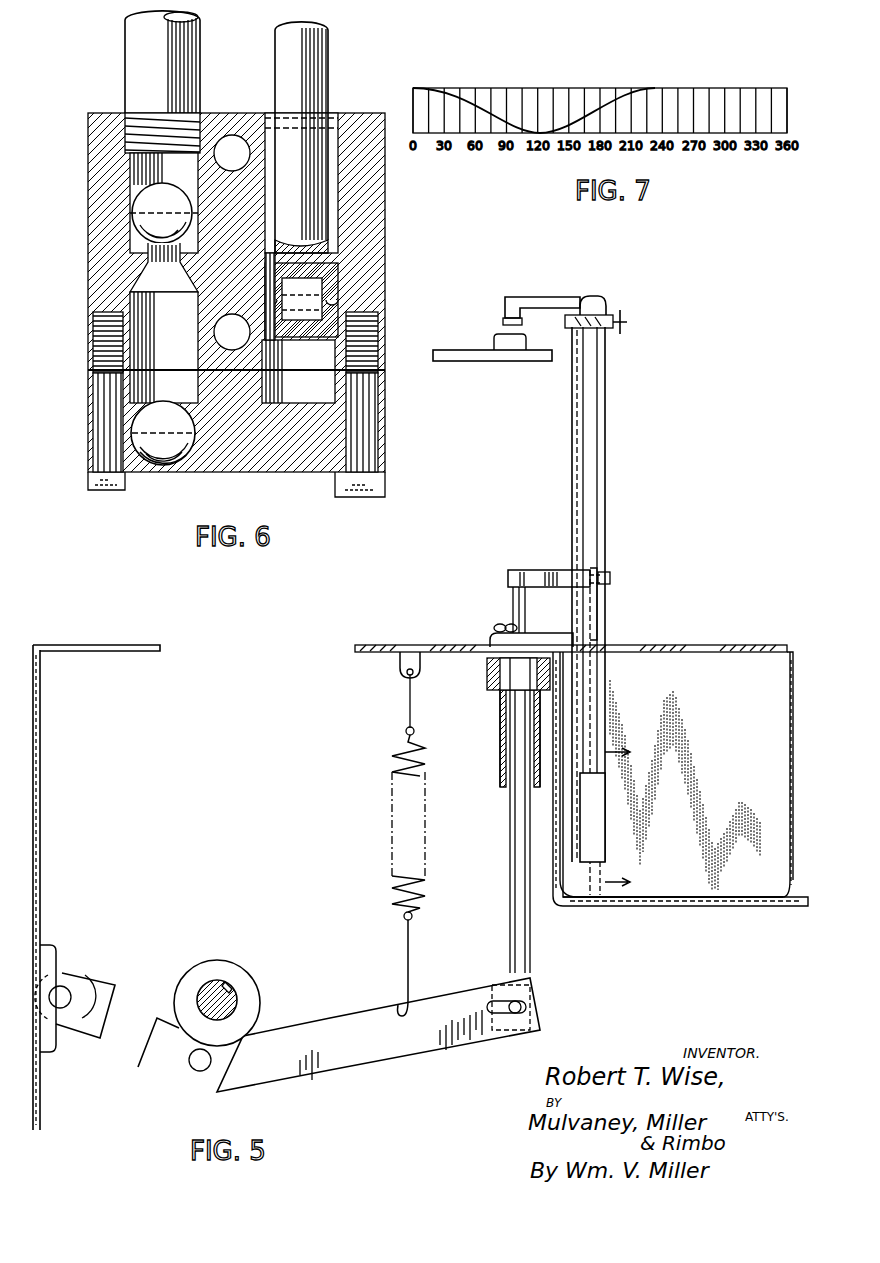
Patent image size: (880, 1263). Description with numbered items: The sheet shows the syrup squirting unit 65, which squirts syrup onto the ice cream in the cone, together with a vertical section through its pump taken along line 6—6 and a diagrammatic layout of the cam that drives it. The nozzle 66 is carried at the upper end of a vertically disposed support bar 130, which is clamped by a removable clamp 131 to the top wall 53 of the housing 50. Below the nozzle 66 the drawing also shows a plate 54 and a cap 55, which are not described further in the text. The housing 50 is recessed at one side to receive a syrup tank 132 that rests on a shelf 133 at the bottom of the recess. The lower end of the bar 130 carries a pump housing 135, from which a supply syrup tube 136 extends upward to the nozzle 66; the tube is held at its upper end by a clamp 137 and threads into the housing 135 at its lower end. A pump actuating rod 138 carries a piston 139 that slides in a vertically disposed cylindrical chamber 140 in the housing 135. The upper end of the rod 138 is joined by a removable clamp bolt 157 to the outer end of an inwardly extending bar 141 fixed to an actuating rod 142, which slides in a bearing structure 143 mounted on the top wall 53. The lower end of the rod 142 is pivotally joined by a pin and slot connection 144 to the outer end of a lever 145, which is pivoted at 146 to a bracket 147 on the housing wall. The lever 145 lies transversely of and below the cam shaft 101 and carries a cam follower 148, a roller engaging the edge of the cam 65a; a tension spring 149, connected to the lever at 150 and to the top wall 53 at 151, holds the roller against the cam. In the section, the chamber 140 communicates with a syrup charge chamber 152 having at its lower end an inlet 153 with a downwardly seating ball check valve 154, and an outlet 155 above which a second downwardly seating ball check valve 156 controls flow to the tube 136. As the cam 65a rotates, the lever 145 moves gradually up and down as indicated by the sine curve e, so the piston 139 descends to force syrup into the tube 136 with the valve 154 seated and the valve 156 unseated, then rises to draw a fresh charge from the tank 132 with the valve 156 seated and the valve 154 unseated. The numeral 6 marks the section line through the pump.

In FIG. 7, the sine curve e is at (478, 122).
In FIG. 5, the housing 50 is at (43, 829).
In FIG. 5, the top wall of the housing 53 is at (378, 644).
In FIG. 5, the dispensing plate 54 is at (470, 355).
In FIG. 5, the cap 55 is at (500, 343).
In FIG. 5, the syrup squirting unit 65 is at (619, 530).
In FIG. 5, the cam 65a is at (237, 967).
In FIG. 5, the nozzle 66 is at (503, 313).
In FIG. 5, the cam shaft 101 is at (210, 988).
In FIG. 5, the support bar 130 is at (572, 470).
In FIG. 5, the removable clamp 131 is at (498, 628).
In FIG. 5, the syrup tank 132 is at (791, 733).
In FIG. 5, the shelf 133 is at (703, 906).
In FIG. 6, the pump housing 135 is at (388, 296).
In FIG. 5, the pump housing 135 is at (597, 840).
In FIG. 6, the supply syrup tube 136 is at (140, 38).
In FIG. 5, the supply syrup tube 136 is at (598, 416).
In FIG. 5, the clamp 137 is at (601, 318).
In FIG. 6, the pump actuating rod 138 is at (283, 60).
In FIG. 6, the piston 139 is at (345, 285).
In FIG. 6, the cylindrical chamber 140 is at (330, 358).
In FIG. 5, the inwardly extending bar 141 is at (540, 571).
In FIG. 5, the actuating rod 142 is at (518, 597).
In FIG. 5, the bearing structure 143 is at (500, 700).
In FIG. 5, the pin and slot connection 144 is at (525, 1006).
In FIG. 5, the lever 145 is at (466, 1000).
In FIG. 5, the pivot 146 is at (68, 993).
In FIG. 5, the bracket 147 is at (48, 955).
In FIG. 5, the cam follower 148 is at (200, 1072).
In FIG. 5, the tension spring 149 is at (400, 872).
In FIG. 5, the spring connection to lever 150 is at (402, 1008).
In FIG. 5, the spring connection to housing top wall 151 is at (401, 695).
In FIG. 6, the syrup charge chamber 152 is at (168, 310).
In FIG. 6, the inlet 153 is at (178, 466).
In FIG. 6, the ball check valve 154 is at (150, 425).
In FIG. 6, the outlet 155 is at (150, 252).
In FIG. 6, the ball check valve 156 is at (150, 205).
In FIG. 5, the removable clamp bolt 157 is at (611, 578).
In FIG. 5, the section line 6— 6 is at (626, 818).